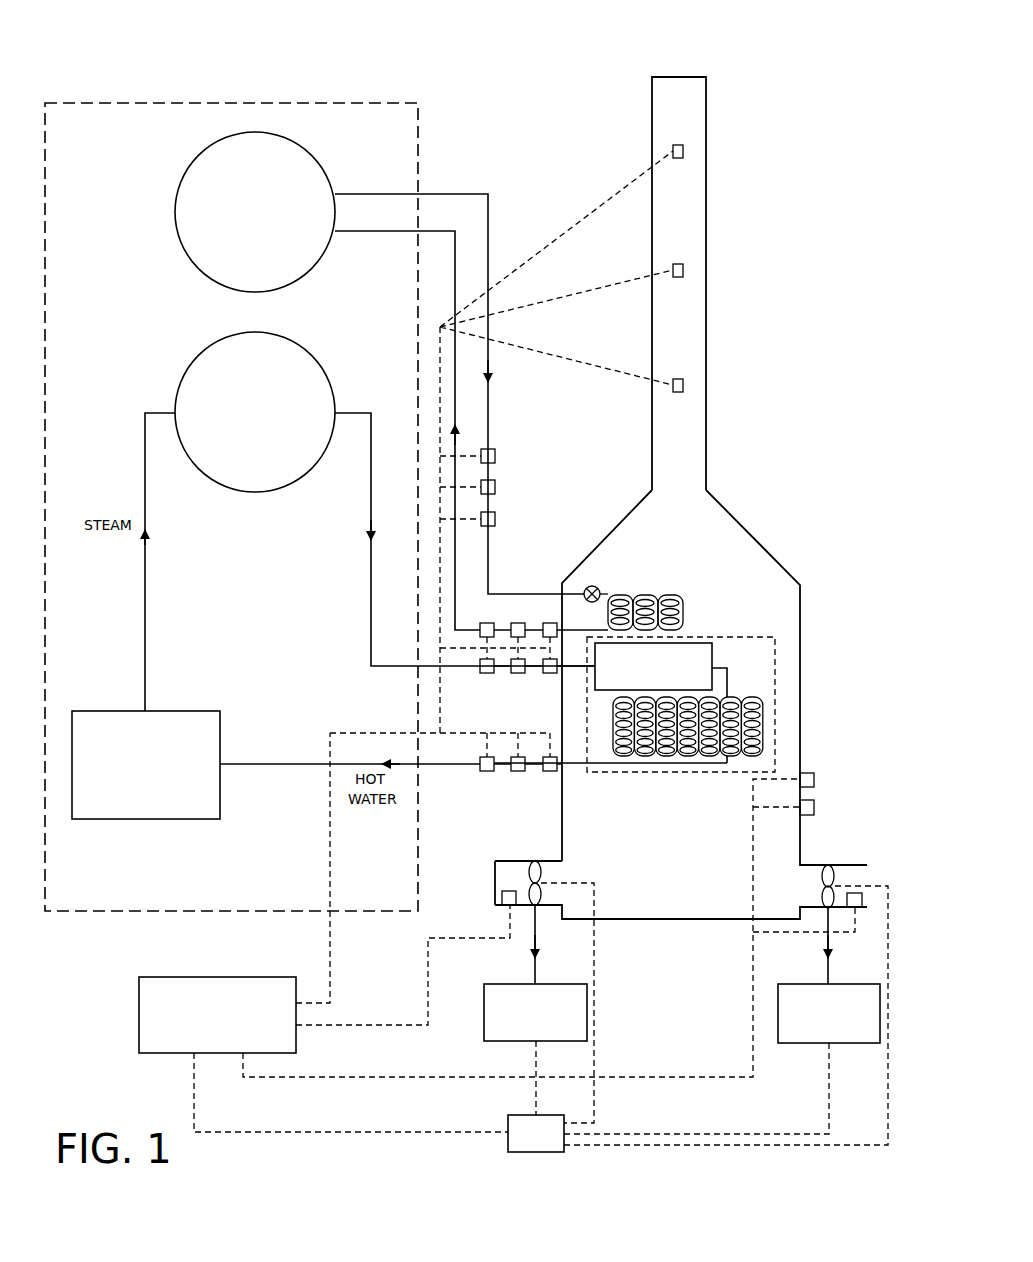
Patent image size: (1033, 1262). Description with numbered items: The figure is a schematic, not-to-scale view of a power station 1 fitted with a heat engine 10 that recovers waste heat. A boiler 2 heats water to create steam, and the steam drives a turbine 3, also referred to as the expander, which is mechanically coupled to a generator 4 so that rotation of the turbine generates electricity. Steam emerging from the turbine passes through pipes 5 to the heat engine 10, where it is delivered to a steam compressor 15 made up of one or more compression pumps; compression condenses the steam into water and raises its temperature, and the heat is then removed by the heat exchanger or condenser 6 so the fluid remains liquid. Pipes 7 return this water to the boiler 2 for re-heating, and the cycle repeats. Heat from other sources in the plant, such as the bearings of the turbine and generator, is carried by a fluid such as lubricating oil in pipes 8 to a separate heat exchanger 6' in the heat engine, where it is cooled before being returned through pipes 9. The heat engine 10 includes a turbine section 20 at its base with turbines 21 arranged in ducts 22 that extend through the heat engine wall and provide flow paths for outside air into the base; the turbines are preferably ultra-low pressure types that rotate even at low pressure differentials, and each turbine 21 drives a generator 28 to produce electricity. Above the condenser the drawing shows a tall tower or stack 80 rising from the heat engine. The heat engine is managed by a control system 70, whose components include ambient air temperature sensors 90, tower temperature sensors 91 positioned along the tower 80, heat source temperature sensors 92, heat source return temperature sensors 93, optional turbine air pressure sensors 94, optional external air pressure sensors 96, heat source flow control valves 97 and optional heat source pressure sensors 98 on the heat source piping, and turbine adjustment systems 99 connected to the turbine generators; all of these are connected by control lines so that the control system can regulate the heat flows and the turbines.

The power station 1 is at (432, 150).
The boiler 2 is at (148, 819).
The turbine 3 is at (207, 352).
The generator 4 is at (192, 158).
The pipes 5 is at (371, 636).
The condenser 6 is at (688, 704).
The heat exchanger 6' is at (622, 589).
The pipes 7 is at (446, 768).
The pipes 8 is at (524, 594).
The pipes 9 is at (455, 606).
The heat engine 10 is at (778, 538).
The steam compressor 15 is at (698, 643).
The turbine section 20 is at (672, 928).
The turbines 21 is at (541, 880).
The ducts 22 is at (508, 882).
The generator 28 is at (484, 1042).
The control system 70 is at (139, 1018).
The stack 80 is at (686, 72).
The ambient air temperature sensors 90 is at (814, 780).
The tower temperature sensors 91 is at (683, 151).
The heat source temperature sensors 92 is at (496, 456).
The heat source return temperature sensors 93 is at (550, 623).
The turbine air pressure sensors 94 is at (502, 898).
The external air pressure sensors 96 is at (814, 807).
The heat source flow control valves 97 is at (496, 487).
The heat source pressure sensors 98 is at (496, 519).
The turbine adjustment systems 99 is at (508, 1128).